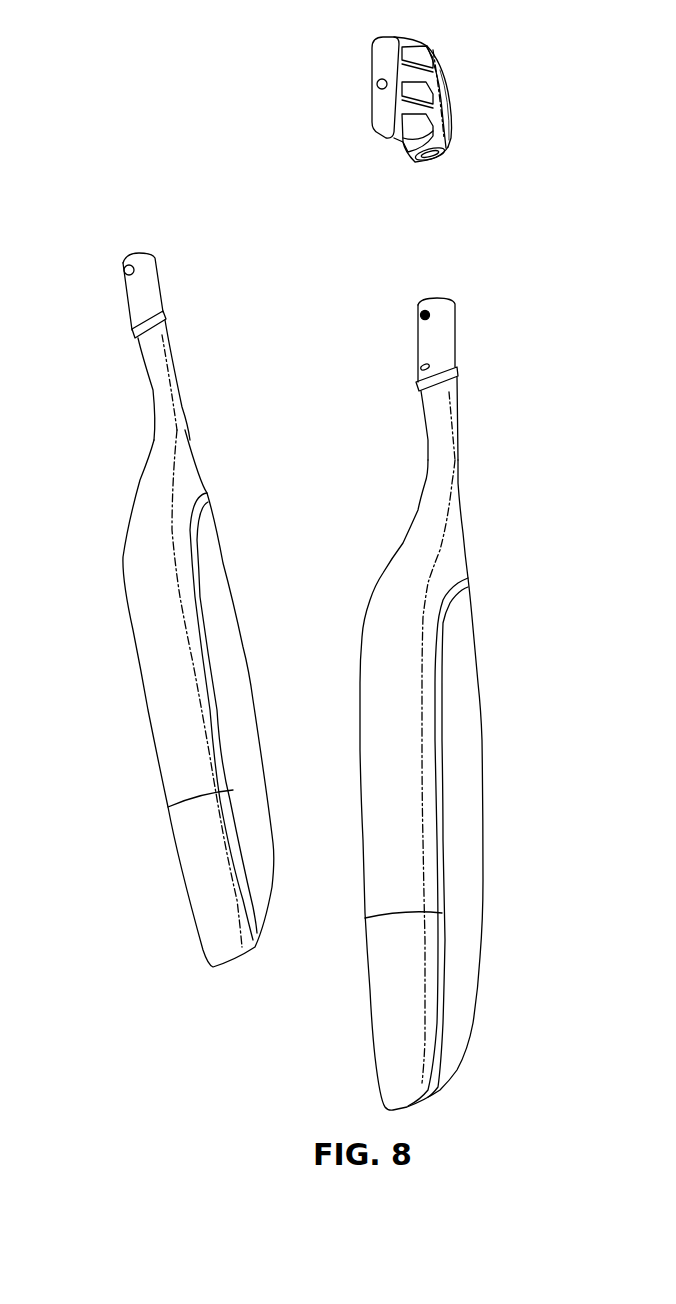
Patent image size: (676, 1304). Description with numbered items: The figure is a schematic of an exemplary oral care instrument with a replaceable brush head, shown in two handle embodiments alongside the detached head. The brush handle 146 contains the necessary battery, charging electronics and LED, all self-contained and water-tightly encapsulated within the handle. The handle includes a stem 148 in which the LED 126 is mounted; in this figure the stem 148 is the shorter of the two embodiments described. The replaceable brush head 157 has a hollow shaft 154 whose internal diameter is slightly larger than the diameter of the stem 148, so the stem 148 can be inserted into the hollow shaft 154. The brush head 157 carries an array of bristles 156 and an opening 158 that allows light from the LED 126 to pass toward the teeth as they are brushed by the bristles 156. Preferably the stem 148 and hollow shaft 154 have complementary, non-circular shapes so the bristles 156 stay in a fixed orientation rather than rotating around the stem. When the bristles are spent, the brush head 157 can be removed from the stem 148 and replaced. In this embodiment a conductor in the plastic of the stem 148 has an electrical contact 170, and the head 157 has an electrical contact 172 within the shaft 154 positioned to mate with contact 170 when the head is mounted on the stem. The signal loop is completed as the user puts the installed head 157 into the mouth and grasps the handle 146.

The LED 126 is at (430, 312).
The brush handle 146 is at (153, 678).
The stem 148 is at (150, 295).
The hollow shaft 154 is at (443, 128).
The bristles 156 is at (385, 42).
The brush head 157 is at (452, 93).
The opening 158 is at (377, 84).
The electrical contact 170 is at (419, 368).
The electrical contact 172 is at (437, 158).